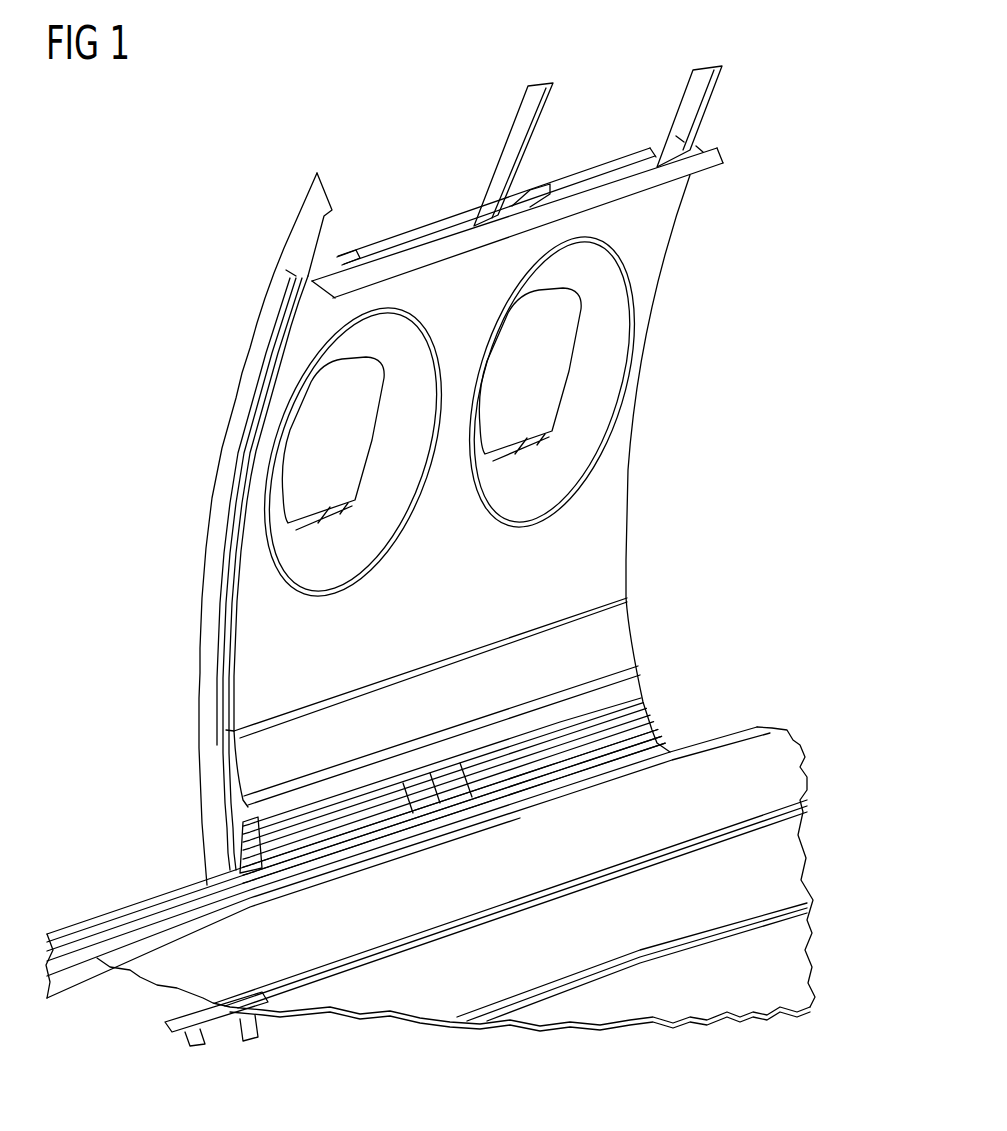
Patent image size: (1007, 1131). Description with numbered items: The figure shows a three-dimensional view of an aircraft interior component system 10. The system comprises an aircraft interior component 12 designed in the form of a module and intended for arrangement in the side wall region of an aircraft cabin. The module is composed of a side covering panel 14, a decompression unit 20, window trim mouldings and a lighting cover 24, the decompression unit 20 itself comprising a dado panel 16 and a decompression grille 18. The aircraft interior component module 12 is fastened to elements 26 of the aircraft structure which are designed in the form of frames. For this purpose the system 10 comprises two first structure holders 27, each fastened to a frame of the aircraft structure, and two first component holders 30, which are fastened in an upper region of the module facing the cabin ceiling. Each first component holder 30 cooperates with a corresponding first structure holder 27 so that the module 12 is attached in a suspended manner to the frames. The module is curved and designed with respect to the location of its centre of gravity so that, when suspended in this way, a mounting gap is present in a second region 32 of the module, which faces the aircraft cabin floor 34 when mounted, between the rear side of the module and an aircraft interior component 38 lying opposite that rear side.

The aircraft interior component system 10 is at (810, 235).
The aircraft interior component module 12 is at (692, 328).
The side covering panel 14 is at (615, 543).
The dado panel 16 is at (617, 644).
The decompression grille 18 is at (645, 713).
The decompression unit 20 is at (592, 421).
The lighting cover 24 is at (535, 218).
The elements of the aircraft structure 26 is at (313, 202).
The first structure holders 27 is at (285, 266).
The first component holders 30 is at (288, 283).
The second region 32 is at (267, 822).
The aircraft cabin floor 34 is at (790, 766).
The aircraft interior component 38 is at (262, 372).